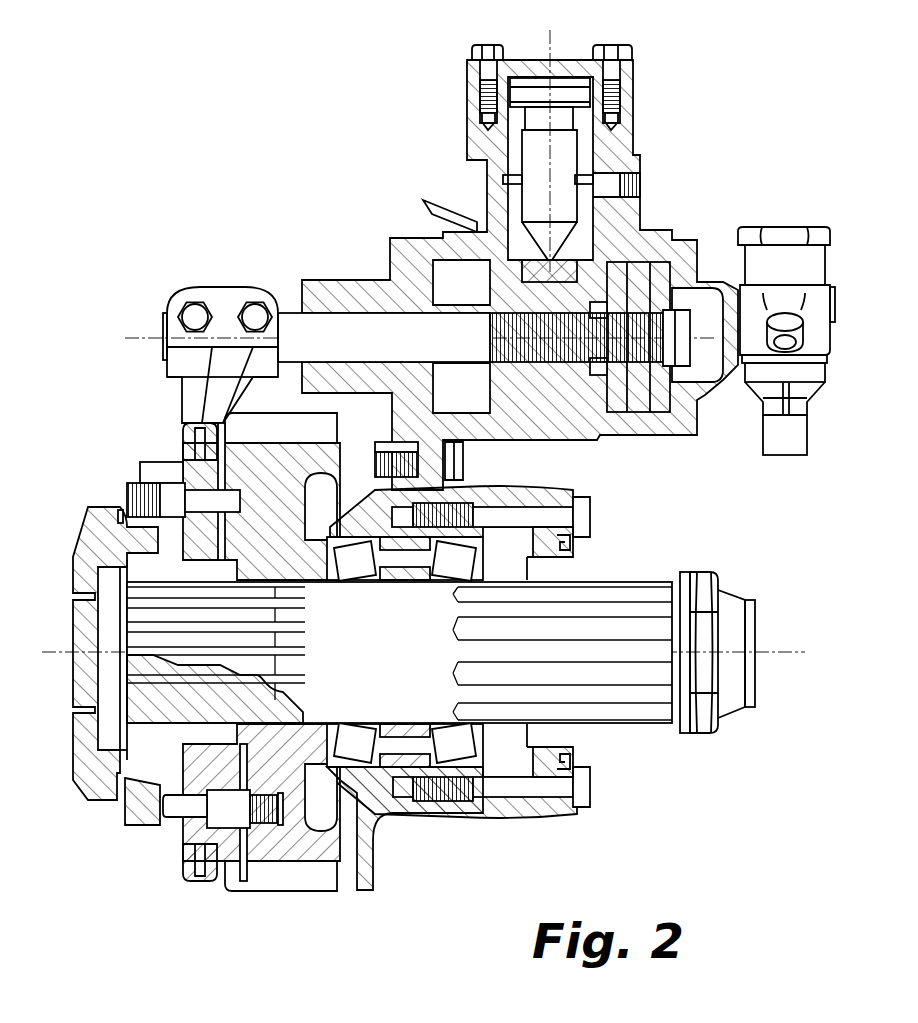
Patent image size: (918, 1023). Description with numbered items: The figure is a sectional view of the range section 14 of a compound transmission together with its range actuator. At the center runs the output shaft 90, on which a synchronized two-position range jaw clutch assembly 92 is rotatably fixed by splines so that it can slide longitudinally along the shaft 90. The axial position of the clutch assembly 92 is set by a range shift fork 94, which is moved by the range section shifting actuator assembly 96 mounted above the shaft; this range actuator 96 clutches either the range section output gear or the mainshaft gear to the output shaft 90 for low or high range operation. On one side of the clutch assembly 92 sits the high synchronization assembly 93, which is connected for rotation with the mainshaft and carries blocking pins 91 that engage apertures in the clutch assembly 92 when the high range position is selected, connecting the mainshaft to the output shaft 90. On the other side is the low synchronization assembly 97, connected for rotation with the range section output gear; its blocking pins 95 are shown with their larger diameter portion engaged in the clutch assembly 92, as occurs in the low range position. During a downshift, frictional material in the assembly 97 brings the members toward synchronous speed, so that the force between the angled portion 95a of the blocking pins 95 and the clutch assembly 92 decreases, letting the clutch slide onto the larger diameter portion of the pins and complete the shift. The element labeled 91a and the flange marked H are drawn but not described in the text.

The range section 14 is at (436, 478).
The output shaft 90 is at (441, 652).
The blocking pins 91 is at (170, 500).
The sleeve 91a is at (183, 480).
The synchronized two-position range jaw clutch assembly 92 is at (183, 453).
The high synchronization assembly 93 is at (77, 540).
The range shift fork 94 is at (182, 378).
The blocking pins 95 is at (230, 810).
The angled portion 95a is at (200, 803).
The range section shifting actuator assembly 96 is at (386, 251).
The low synchronization assembly 97 is at (267, 828).
The flange hub H is at (374, 873).